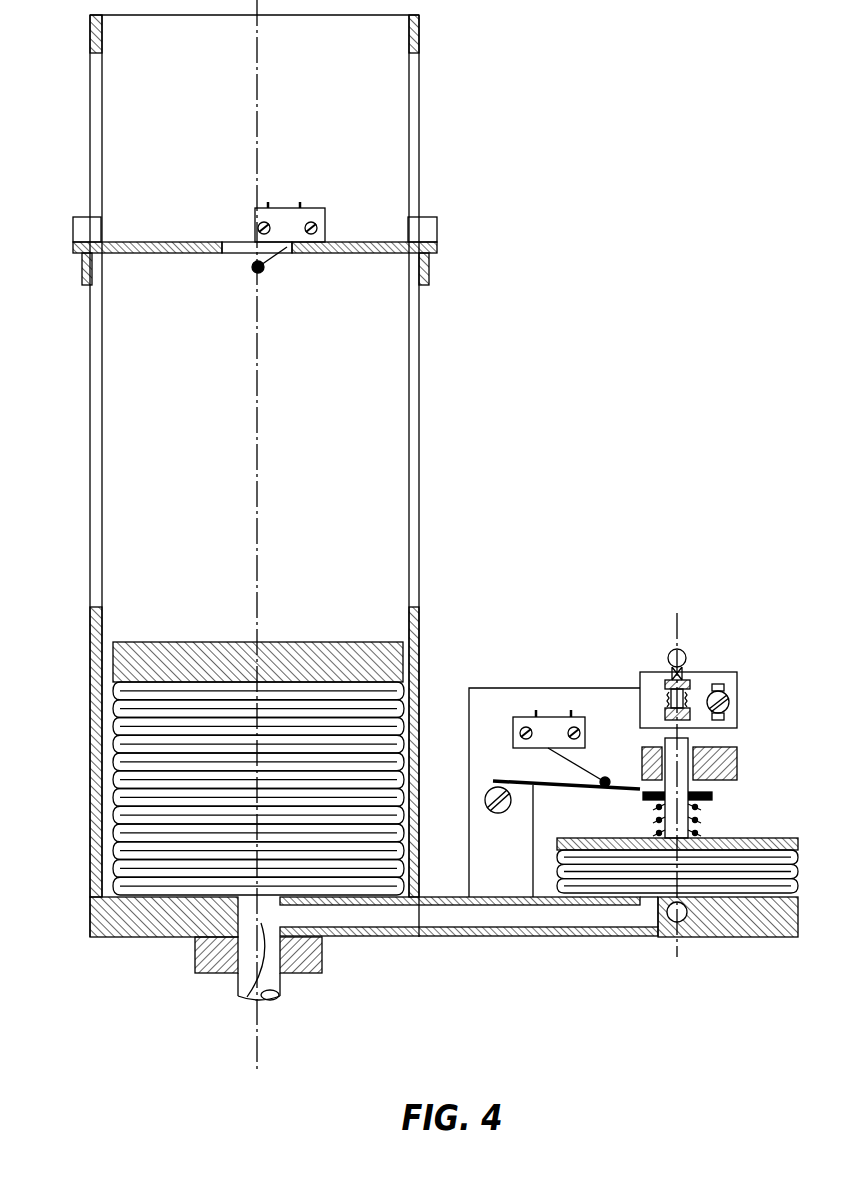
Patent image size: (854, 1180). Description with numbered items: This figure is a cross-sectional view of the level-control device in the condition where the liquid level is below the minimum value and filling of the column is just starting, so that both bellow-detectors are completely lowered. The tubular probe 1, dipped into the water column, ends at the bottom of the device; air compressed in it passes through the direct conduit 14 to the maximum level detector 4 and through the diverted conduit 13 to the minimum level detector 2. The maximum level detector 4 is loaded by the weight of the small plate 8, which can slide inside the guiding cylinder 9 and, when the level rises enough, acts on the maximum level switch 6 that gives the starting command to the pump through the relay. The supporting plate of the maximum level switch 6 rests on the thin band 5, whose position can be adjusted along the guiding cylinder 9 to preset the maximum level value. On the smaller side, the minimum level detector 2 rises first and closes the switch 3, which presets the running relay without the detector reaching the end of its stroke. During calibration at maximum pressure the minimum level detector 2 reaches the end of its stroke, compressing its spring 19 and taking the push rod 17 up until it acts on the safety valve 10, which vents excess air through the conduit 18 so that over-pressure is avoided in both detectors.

The tubular probe 1 is at (268, 998).
The minimum level detector 2 is at (713, 868).
The switch 3 is at (547, 735).
The maximum level detector 4 is at (152, 808).
The thin band 5 is at (78, 263).
The maximum level switch 6 is at (303, 213).
The small plate 8 is at (315, 658).
The guiding cylinder 9 is at (93, 658).
The safety valve 10 is at (688, 663).
The diverted conduit 13 is at (527, 937).
The direct conduit 14 is at (247, 997).
The push rod 17 is at (683, 757).
The conduit 18 is at (662, 935).
The spring 19 is at (695, 822).